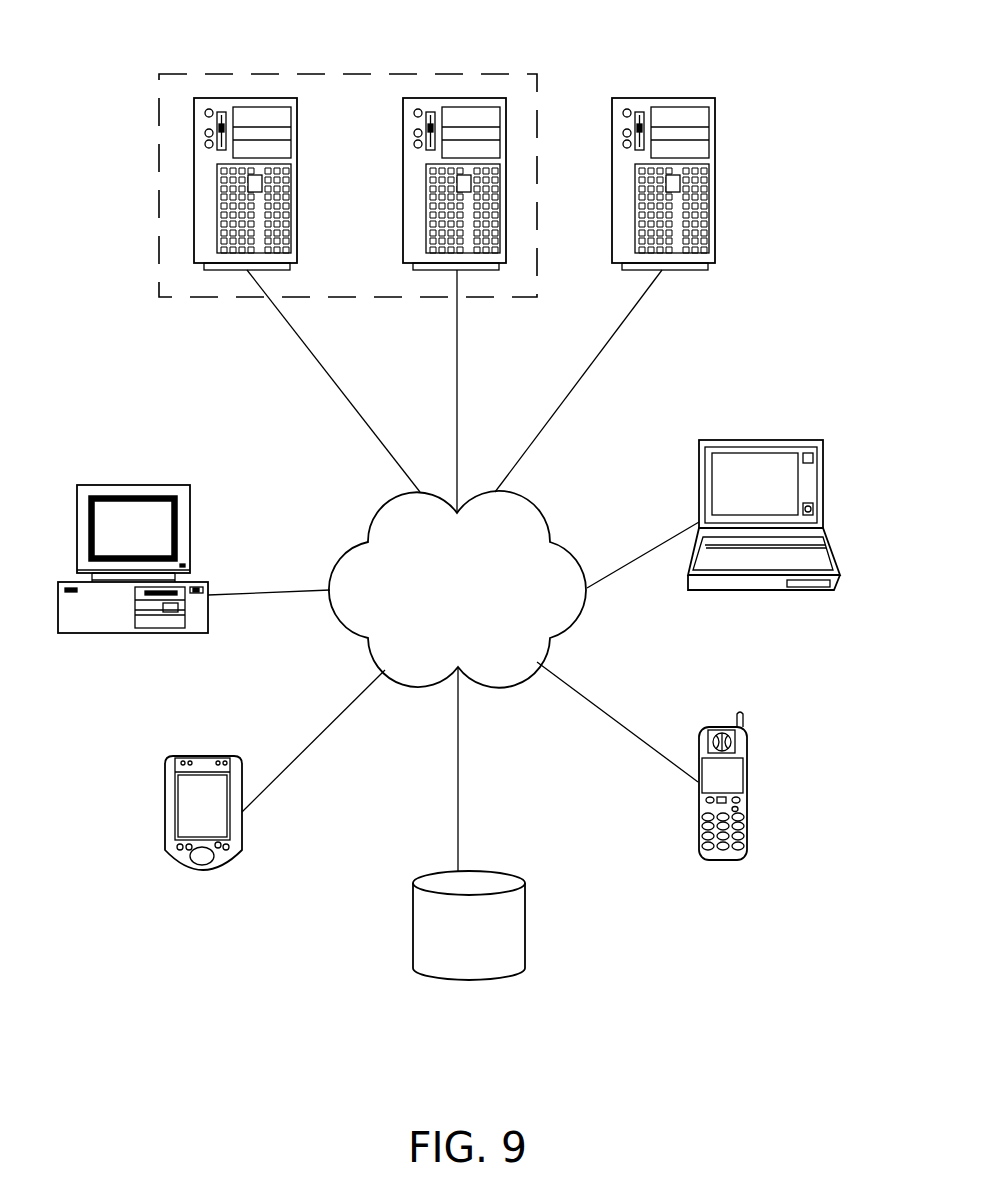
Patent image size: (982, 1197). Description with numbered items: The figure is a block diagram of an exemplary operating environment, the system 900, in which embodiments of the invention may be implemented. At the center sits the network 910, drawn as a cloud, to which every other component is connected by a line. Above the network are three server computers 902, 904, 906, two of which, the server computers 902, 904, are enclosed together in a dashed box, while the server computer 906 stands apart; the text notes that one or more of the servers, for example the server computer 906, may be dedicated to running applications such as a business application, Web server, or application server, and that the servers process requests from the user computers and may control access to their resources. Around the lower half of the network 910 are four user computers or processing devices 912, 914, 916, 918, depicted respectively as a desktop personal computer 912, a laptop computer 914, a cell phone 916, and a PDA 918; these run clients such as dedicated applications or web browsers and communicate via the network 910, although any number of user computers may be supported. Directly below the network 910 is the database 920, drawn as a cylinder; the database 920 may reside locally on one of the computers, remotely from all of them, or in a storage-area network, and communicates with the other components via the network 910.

The system 900 is at (810, 98).
The server computer 902 is at (227, 98).
The server computer 904 is at (452, 98).
The server computer 906 is at (715, 180).
The network 910 is at (476, 636).
The user computer 912 is at (128, 485).
The user computer 914 is at (758, 440).
The user computer 916 is at (720, 860).
The user computer 918 is at (203, 870).
The database 920 is at (491, 969).